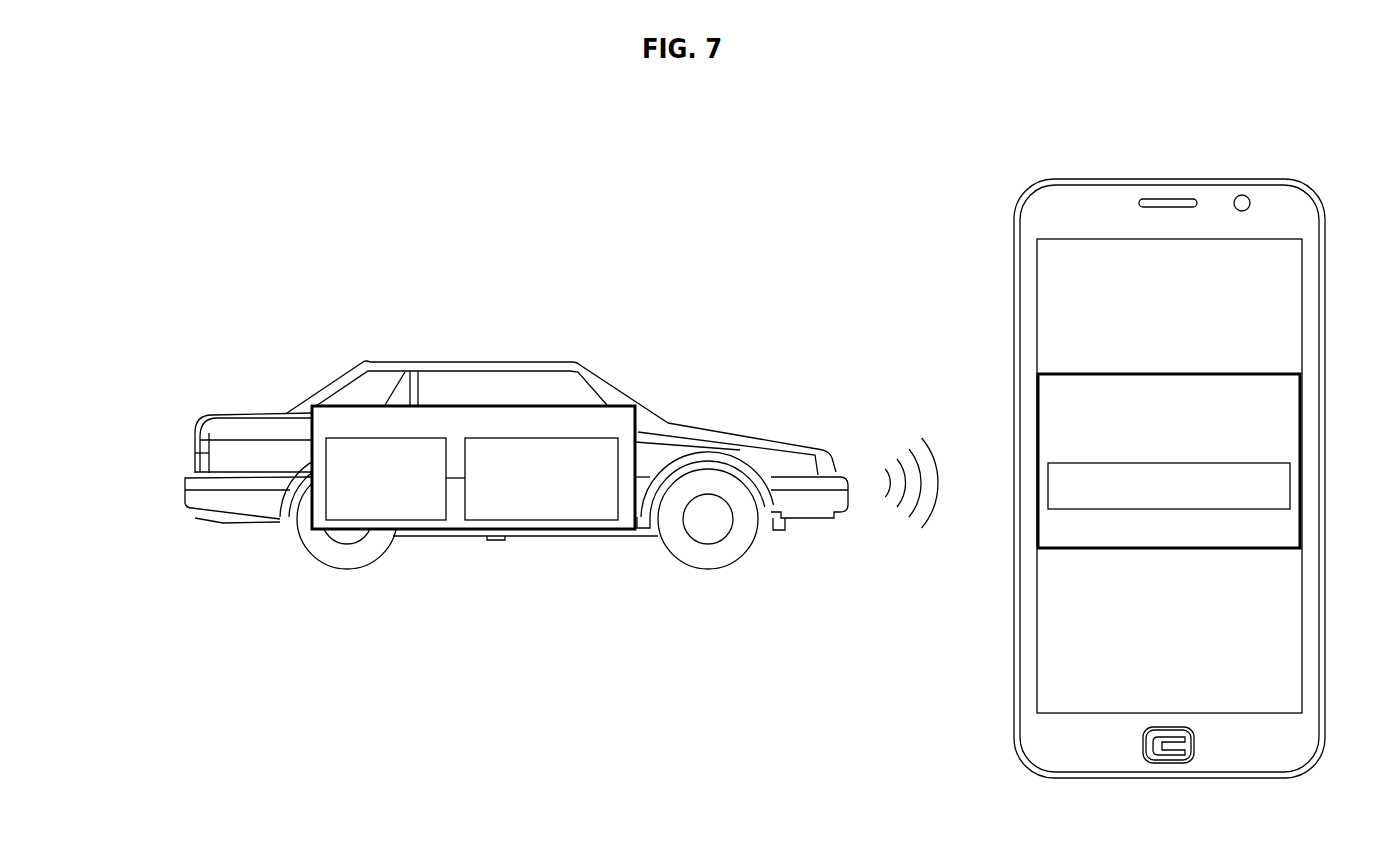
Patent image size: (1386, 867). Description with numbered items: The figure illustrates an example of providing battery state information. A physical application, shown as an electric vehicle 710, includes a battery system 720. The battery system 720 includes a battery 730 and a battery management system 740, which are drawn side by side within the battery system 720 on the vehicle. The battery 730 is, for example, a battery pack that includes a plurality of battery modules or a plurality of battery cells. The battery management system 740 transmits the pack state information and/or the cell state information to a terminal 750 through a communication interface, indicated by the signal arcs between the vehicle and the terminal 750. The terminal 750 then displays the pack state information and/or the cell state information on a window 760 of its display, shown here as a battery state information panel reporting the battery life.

The electric vehicle 710 is at (472, 362).
The battery system 720 is at (473, 455).
The battery 730 is at (380, 437).
The battery management system 740 is at (542, 437).
The terminal 750 is at (1169, 463).
The window 760 is at (1168, 373).